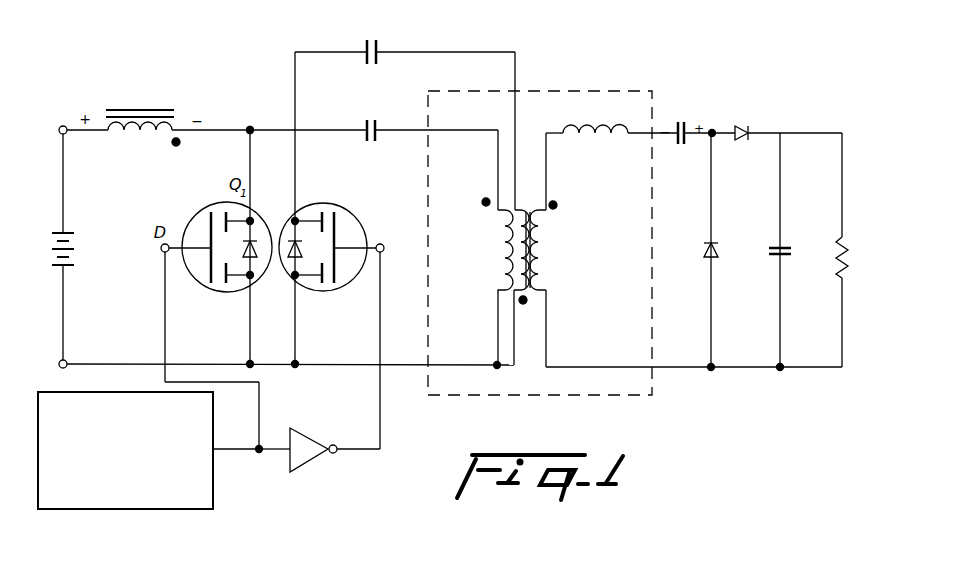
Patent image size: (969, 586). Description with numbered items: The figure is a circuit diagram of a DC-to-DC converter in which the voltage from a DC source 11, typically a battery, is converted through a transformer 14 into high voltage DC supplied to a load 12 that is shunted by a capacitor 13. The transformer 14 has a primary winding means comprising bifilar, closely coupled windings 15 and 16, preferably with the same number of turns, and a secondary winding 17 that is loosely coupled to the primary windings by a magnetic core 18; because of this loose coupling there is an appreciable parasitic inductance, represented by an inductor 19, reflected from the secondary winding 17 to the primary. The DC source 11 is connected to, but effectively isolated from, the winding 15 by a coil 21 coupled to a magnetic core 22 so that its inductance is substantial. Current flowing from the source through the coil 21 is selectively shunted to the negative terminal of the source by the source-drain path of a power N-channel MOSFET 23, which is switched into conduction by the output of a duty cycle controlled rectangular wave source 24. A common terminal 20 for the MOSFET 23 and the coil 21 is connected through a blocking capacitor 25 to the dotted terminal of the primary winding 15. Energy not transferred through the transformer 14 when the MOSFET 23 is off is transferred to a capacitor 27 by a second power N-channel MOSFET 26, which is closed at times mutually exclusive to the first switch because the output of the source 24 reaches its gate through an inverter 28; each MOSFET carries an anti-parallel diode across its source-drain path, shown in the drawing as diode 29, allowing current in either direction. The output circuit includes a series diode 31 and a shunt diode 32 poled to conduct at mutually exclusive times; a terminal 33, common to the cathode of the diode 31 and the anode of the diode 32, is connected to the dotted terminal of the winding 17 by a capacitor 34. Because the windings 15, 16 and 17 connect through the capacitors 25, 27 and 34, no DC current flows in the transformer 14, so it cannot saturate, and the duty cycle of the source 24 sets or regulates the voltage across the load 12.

The DC source 11 is at (60, 238).
The load 12 is at (845, 262).
The capacitor 13 is at (786, 247).
The transformer 14 is at (540, 213).
The primary winding 15 is at (500, 228).
The primary winding 16 is at (519, 278).
The secondary winding 17 is at (546, 258).
The magnetic core 18 is at (530, 288).
The inductor 19 is at (601, 136).
The common terminal 20 is at (250, 126).
The coil 21 is at (137, 128).
The magnetic core 22 is at (146, 108).
The power N-channel MOSFET 23 is at (179, 185).
The duty cycle controlled rectangular wave source 24 is at (67, 498).
The blocking capacitor 25 is at (367, 141).
The power N-channel MOSFET 26 is at (348, 223).
The capacitor 27 is at (367, 64).
The inverter 28 is at (298, 457).
The body diode of Q2 29 is at (291, 262).
The series diode 31 is at (741, 141).
The shunt diode 32 is at (706, 255).
The terminal 33 is at (715, 128).
The capacitor 34 is at (682, 119).